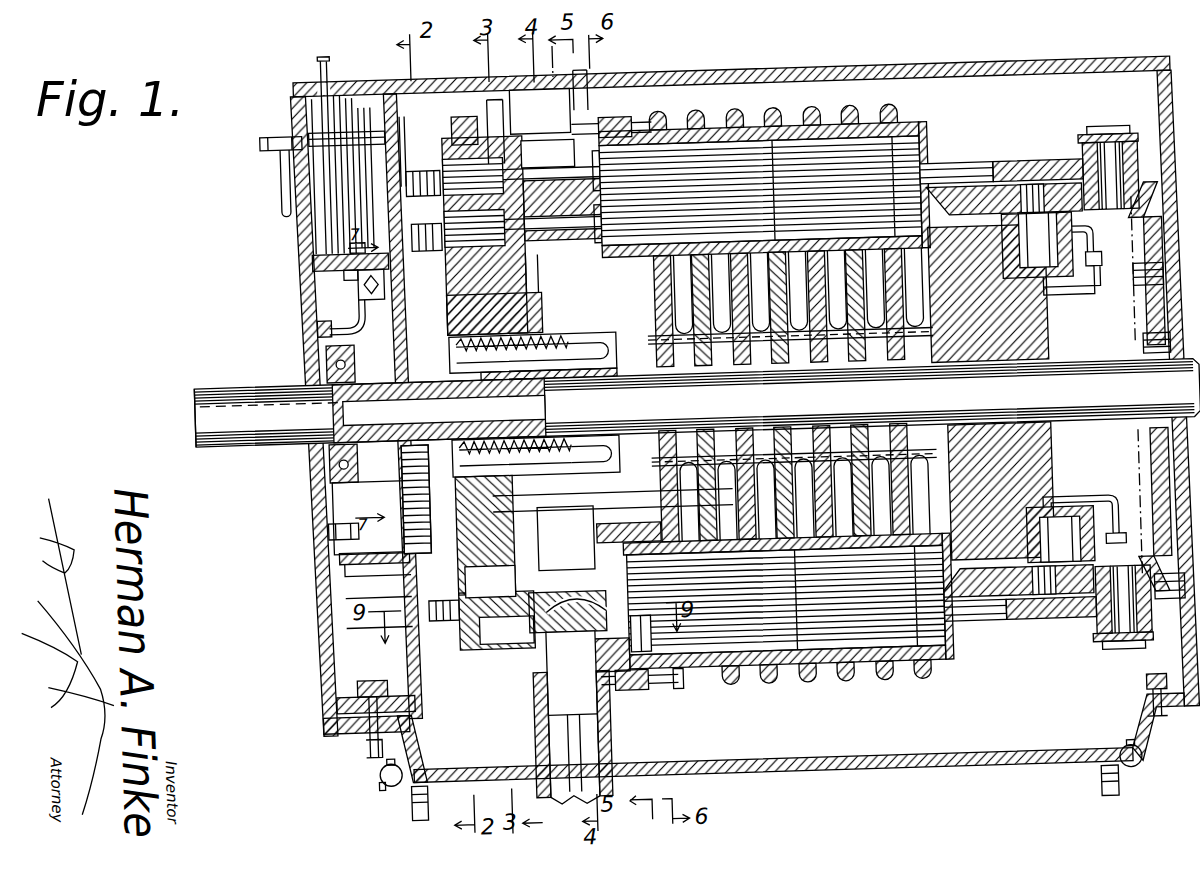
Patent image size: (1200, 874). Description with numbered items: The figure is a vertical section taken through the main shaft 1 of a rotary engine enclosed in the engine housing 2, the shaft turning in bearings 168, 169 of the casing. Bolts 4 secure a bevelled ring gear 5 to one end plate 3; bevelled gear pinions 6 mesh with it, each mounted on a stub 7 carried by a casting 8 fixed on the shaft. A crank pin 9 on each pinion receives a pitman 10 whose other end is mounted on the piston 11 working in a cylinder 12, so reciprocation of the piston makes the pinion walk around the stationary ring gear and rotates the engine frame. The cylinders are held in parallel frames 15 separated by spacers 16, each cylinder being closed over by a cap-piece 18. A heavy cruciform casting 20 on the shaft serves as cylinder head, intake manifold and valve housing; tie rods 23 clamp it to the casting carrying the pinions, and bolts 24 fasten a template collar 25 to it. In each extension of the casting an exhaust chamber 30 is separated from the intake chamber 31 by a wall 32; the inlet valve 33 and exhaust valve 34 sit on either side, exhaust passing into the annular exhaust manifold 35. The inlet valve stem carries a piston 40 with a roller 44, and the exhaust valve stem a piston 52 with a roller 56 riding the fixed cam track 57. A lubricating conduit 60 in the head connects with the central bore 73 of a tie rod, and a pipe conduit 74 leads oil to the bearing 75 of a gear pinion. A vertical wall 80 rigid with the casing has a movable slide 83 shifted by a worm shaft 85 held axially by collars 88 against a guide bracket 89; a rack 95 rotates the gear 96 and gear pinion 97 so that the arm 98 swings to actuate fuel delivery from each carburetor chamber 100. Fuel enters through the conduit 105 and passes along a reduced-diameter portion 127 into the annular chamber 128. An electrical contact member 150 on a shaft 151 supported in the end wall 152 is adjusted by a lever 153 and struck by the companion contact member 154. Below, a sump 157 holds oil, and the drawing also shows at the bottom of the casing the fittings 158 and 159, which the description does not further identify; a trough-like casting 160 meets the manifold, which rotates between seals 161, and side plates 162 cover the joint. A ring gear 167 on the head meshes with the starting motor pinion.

The main shaft 1 is at (235, 388).
The engine housing 2 is at (1044, 84).
The end plate 3 is at (1157, 108).
The bolts 4 is at (1124, 300).
The bevelled ring gear 5 is at (1138, 315).
The bevelled gear pinions 6 is at (950, 205).
The stub 7 is at (1068, 266).
The casting 8 is at (1040, 448).
The crank pin 9 is at (1088, 170).
The pitman 10 is at (1012, 186).
The piston 11 is at (938, 660).
The cylinder 12 is at (775, 656).
The frames or bails 15 is at (812, 336).
The spacers 16 is at (716, 309).
The cap-piece 18 is at (845, 690).
The casting 20 is at (450, 292).
The tie rods 23 is at (548, 306).
The bolts 24 is at (626, 130).
The template collar 25 is at (600, 110).
The exhaust chamber 30 is at (527, 156).
The intake chamber 31 is at (558, 270).
The wall 32 is at (606, 192).
The inlet valve 33 is at (606, 228).
The exhaust valve 34 is at (655, 192).
The exhaust manifold 35 is at (539, 111).
The piston 40 is at (484, 590).
The roller 44 is at (396, 600).
The piston 52 is at (504, 640).
The roller 56 is at (442, 655).
The cam track 57 is at (386, 675).
The conduit 60 is at (566, 538).
The central bore 73 is at (536, 462).
The pipe conduit 74 is at (1060, 510).
The bearing 75 is at (1142, 598).
The vertical wall 80 is at (383, 190).
The slide 83 is at (396, 345).
The shaft 85 is at (320, 318).
The collars 88 is at (308, 332).
The guide bracket 89 is at (350, 290).
The rack 95 is at (396, 585).
The gear 96 is at (396, 575).
The gear pinion 97 is at (360, 508).
The arm 98 is at (396, 470).
The carburetor chamber 100 is at (600, 463).
The conduit 105 is at (318, 65).
The reduced-diameter portion 127 is at (208, 392).
The annular chamber 128 is at (436, 370).
The electrical contact member 150 is at (383, 166).
The shaft 151 is at (345, 134).
The end wall 152 is at (300, 264).
The lever 153 is at (280, 200).
The electrical contact member 154 is at (383, 213).
The sump 157 is at (892, 786).
The drain valve 158 is at (1148, 734).
The drain valve 159 is at (358, 774).
The casting 160 is at (513, 745).
The seals 161 is at (595, 100).
The side plates 162 is at (600, 740).
The ring gear 167 is at (448, 130).
The bearing 168 is at (1135, 366).
The bearing 169 is at (314, 364).